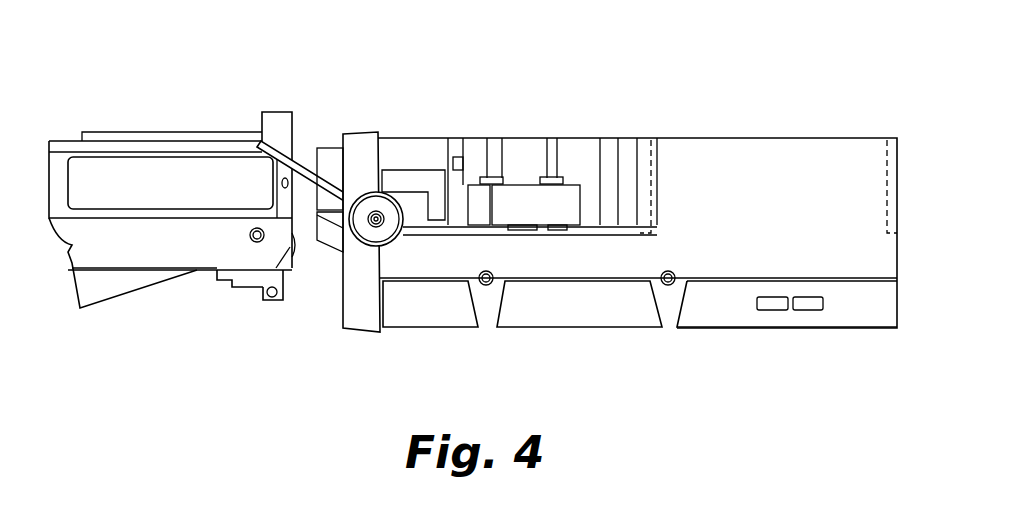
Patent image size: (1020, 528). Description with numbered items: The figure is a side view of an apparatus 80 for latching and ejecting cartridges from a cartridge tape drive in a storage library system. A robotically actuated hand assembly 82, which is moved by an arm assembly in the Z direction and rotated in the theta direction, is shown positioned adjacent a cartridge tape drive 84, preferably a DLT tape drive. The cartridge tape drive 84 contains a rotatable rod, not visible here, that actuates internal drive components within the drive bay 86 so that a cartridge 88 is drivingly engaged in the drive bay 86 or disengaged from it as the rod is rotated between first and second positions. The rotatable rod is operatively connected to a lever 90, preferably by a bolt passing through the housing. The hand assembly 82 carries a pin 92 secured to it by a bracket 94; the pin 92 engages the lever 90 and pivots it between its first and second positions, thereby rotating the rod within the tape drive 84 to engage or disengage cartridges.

The apparatus 80 is at (315, 276).
The hand assembly 82 is at (177, 135).
The cartridge tape drive 84 is at (667, 147).
The drive bay 86 is at (420, 162).
The cartridge 88 is at (345, 136).
The lever 90 is at (295, 165).
The pin 92 is at (277, 301).
The bracket 94 is at (255, 286).